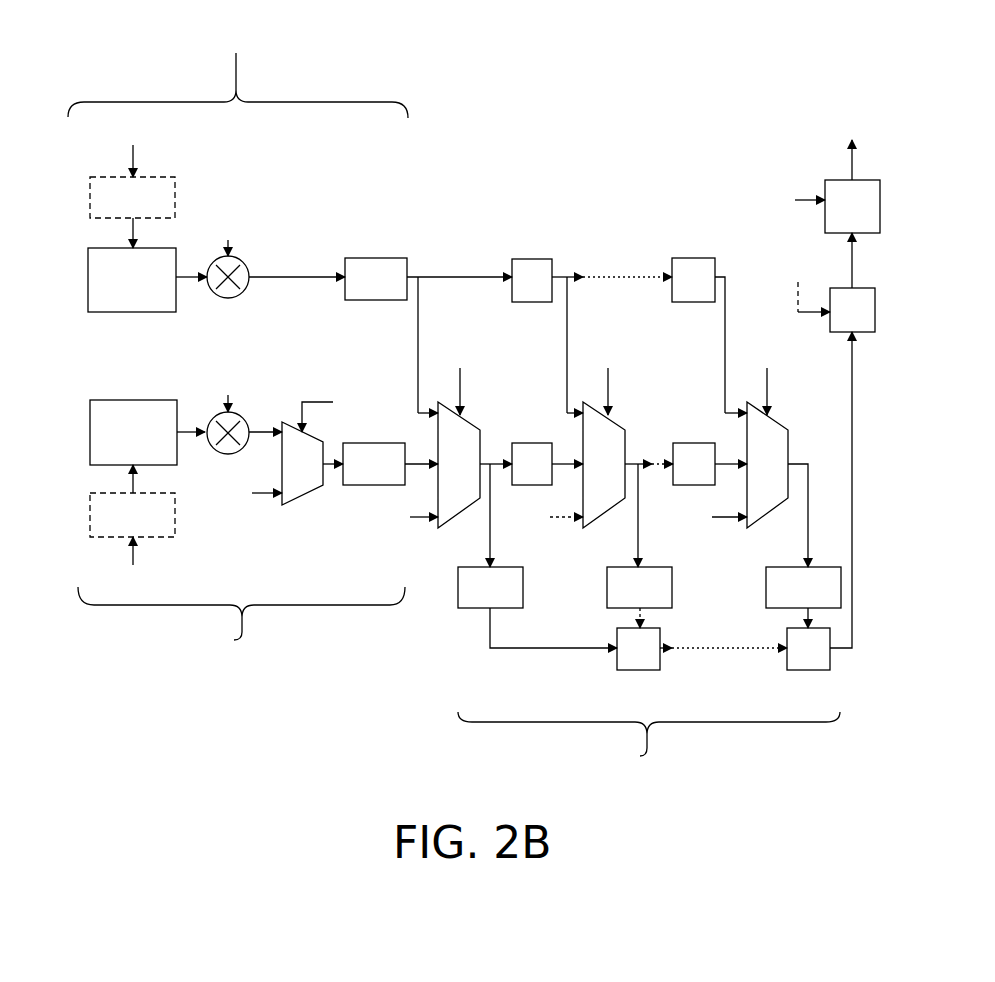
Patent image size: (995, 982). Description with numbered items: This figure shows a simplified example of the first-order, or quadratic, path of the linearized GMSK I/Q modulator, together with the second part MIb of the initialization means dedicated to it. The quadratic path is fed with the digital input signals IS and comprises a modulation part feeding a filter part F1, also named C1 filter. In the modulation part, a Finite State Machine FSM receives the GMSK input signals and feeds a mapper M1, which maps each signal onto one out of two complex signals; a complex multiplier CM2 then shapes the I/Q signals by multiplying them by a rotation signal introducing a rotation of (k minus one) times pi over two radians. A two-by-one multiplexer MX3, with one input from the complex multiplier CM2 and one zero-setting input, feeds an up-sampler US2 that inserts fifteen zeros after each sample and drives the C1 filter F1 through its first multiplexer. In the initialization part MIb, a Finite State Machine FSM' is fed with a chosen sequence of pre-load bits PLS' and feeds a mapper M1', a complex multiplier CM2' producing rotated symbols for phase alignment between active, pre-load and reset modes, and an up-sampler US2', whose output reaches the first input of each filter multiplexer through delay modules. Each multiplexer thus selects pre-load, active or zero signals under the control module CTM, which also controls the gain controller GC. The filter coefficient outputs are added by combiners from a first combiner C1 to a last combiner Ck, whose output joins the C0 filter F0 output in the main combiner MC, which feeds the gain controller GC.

The second part of the initialization means MIb is at (238, 73).
The sequence of initialization bits PLS' is at (140, 146).
The Finite State Machine FSM' is at (132, 197).
The mapper M1' is at (132, 309).
The complex multiplier CM2' is at (232, 278).
The up-sampler US2' is at (376, 250).
The mapper M1 is at (133, 405).
The complex multiplier CM2 is at (219, 434).
The 2×1 multiplexer MX3 is at (284, 505).
The up-sampler US2 is at (364, 489).
The control module CTM is at (563, 310).
The combiner C1 is at (628, 670).
The last combiner Ck is at (793, 670).
The main combiner MC is at (833, 332).
The C0 filter F0 is at (807, 283).
The gain controller GC is at (828, 178).
The Finite State Machine FSM is at (132, 515).
The digital input signals IS is at (130, 568).
The C1 filter F1 is at (649, 746).